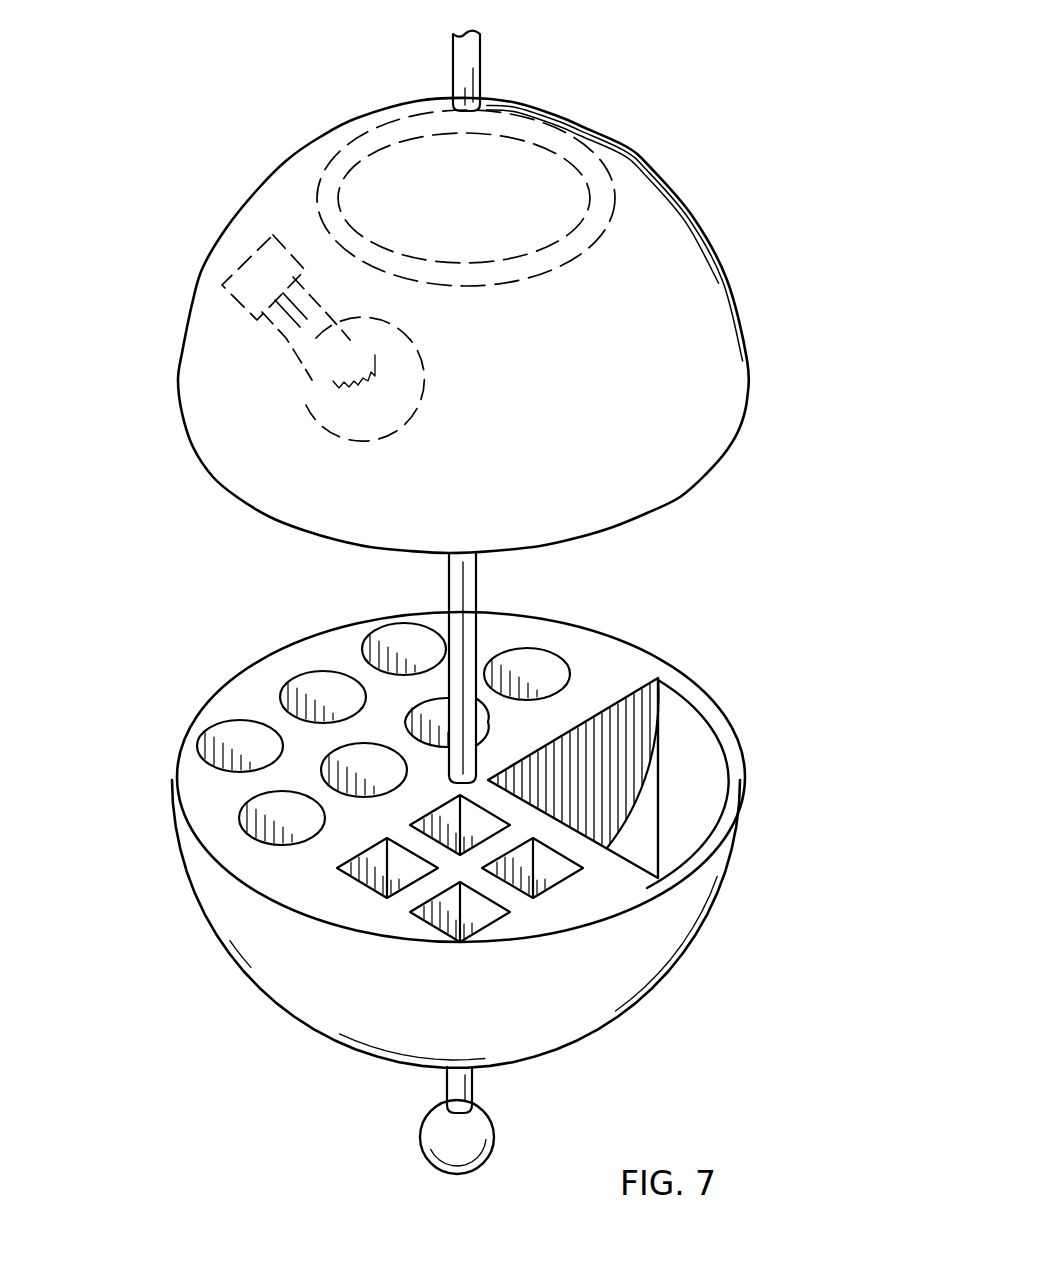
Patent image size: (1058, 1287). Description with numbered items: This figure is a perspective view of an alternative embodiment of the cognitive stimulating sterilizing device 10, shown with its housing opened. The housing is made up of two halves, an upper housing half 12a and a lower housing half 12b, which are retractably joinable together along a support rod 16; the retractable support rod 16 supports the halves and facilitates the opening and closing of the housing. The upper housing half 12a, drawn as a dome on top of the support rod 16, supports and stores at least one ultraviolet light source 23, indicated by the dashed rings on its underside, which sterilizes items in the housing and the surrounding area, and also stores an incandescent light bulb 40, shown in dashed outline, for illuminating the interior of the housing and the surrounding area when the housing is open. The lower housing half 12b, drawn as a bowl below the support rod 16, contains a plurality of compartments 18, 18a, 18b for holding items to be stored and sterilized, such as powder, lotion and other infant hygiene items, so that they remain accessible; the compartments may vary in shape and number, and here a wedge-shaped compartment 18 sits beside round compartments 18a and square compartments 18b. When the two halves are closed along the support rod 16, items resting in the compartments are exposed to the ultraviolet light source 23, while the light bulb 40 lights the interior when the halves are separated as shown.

The cognitive stimulating sterilizing device 10 is at (658, 102).
The upper housing half 12a is at (712, 242).
The lower housing half 12b is at (670, 962).
The support rod 16 is at (460, 58).
The compartment 18 is at (693, 763).
The compartment 18a is at (227, 738).
The compartment 18b is at (342, 868).
The ultraviolet light source 23 is at (353, 145).
The light bulb 40 is at (257, 320).